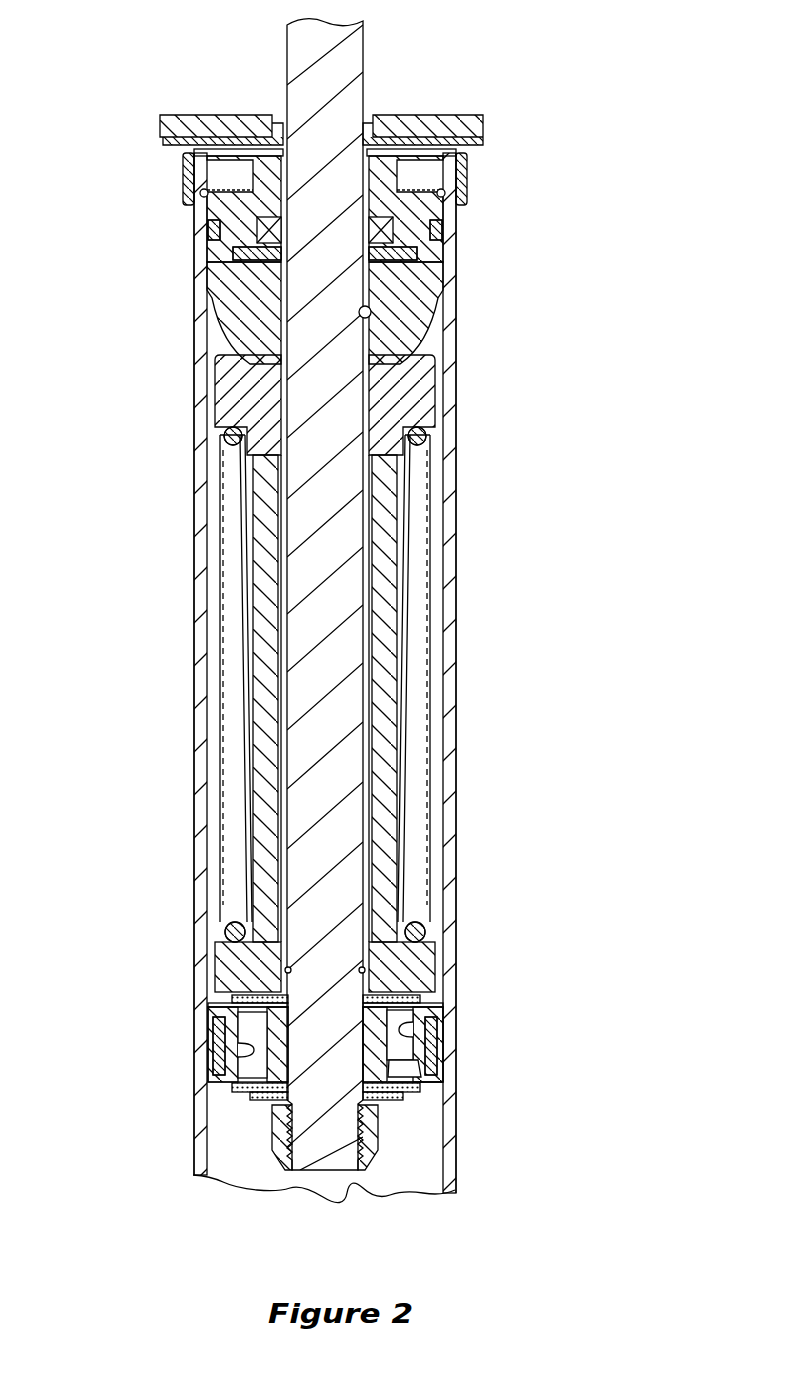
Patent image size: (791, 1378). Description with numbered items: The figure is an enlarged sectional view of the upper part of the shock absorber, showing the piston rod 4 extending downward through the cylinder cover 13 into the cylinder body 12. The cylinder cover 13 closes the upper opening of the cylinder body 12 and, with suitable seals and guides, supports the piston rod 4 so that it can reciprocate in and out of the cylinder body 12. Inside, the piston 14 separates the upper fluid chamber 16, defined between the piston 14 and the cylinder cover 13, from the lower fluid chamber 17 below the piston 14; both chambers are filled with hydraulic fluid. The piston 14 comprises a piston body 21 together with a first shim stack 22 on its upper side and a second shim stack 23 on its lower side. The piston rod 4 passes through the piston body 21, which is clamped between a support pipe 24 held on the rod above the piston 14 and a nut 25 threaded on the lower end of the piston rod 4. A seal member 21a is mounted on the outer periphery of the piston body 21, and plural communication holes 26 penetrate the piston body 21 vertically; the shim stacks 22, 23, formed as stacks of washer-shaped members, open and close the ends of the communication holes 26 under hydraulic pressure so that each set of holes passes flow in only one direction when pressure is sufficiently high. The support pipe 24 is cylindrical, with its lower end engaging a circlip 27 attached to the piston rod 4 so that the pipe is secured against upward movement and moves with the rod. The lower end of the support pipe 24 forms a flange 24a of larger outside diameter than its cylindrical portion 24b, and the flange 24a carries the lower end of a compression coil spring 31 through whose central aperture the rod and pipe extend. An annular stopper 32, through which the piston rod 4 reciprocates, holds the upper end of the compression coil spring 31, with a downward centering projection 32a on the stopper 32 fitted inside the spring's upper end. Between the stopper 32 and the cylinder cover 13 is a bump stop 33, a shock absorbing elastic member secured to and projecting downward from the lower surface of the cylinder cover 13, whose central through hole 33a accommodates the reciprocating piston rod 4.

The piston rod 4 is at (363, 32).
The cylinder body 12 is at (194, 605).
The cylinder cover 13 is at (440, 213).
The piston 14 is at (431, 1085).
The upper fluid chamber 16 is at (437, 568).
The lower fluid chamber 17 is at (427, 1162).
The piston body 21 is at (212, 1098).
The seal member 21a is at (215, 1033).
The first shim stack 22 is at (250, 1095).
The second shim stack 23 is at (215, 1003).
The support pipe 24 is at (403, 758).
The flange 24a is at (425, 963).
The cylindrical portion 24b is at (388, 673).
The nut 25 is at (274, 1155).
The communication holes 26 is at (543, 1022).
The circlip 27 is at (360, 968).
The compression coil spring 31 is at (225, 933).
The stopper 32 is at (435, 400).
The centering projection 32a is at (405, 480).
The bump stop 33 is at (432, 335).
The central through hole 33a is at (371, 313).